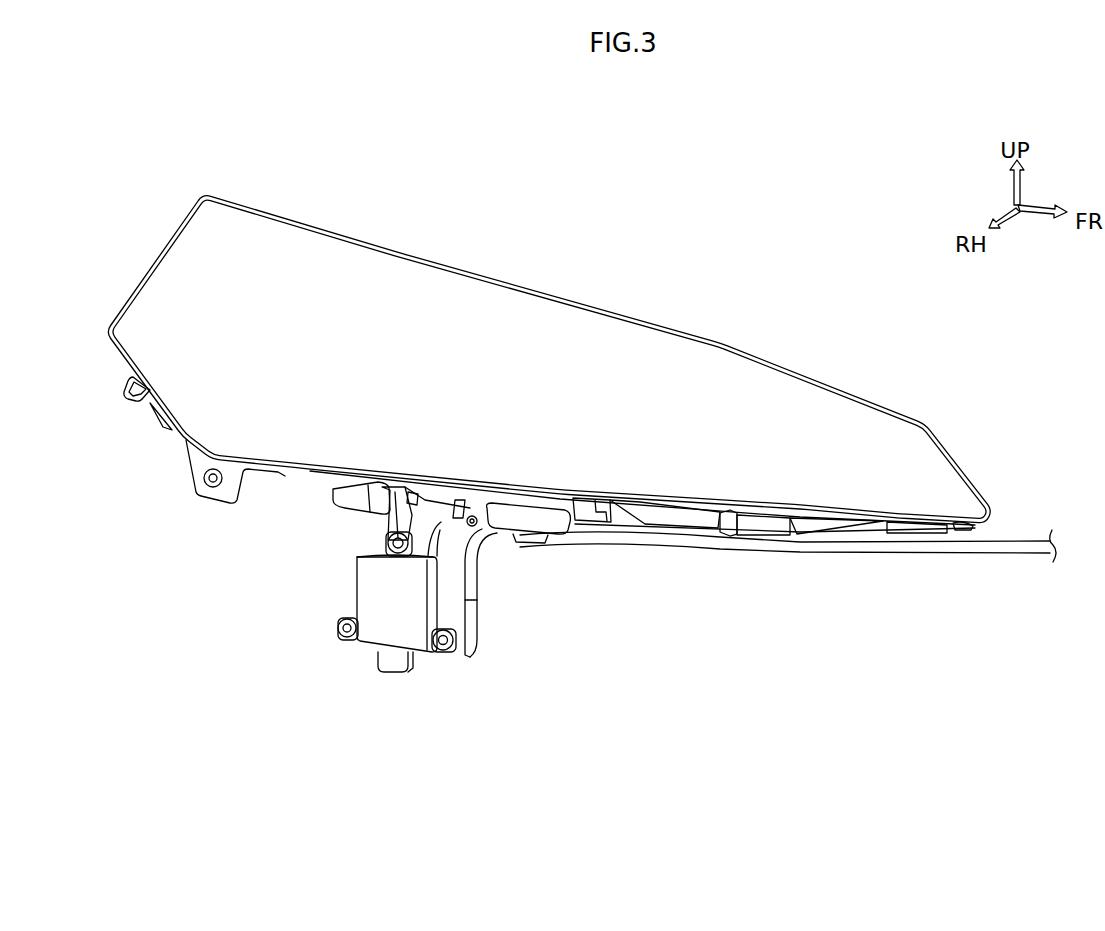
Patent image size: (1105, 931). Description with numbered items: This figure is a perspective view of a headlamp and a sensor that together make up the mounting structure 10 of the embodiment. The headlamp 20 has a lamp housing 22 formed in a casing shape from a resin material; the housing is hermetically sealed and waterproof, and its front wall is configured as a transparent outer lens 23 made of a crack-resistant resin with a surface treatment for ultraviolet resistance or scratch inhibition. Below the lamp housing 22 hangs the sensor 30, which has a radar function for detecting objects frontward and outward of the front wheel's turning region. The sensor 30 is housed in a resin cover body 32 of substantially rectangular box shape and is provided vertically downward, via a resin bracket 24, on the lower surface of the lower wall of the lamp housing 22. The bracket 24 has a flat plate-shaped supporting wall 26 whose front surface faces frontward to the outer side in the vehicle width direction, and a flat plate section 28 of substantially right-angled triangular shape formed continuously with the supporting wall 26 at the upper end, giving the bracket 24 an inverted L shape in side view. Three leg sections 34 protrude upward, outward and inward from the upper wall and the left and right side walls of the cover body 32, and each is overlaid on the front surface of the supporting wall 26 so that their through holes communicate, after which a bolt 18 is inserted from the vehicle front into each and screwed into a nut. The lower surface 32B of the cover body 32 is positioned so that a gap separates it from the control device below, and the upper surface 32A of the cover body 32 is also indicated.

The mounting structure 10 is at (568, 587).
The bolt 18 is at (383, 548).
The headlamp 20 is at (549, 348).
The lamp housing 22 is at (338, 485).
The outer lens 23 is at (650, 360).
The bracket 24 is at (509, 609).
The supporting wall 26 is at (453, 618).
The flat plate section 28 is at (493, 541).
The sensor 30 is at (355, 651).
The cover body 32 is at (355, 651).
The case upper surface 32A is at (428, 575).
The lower surface 32B is at (408, 668).
The leg section 34 is at (428, 500).